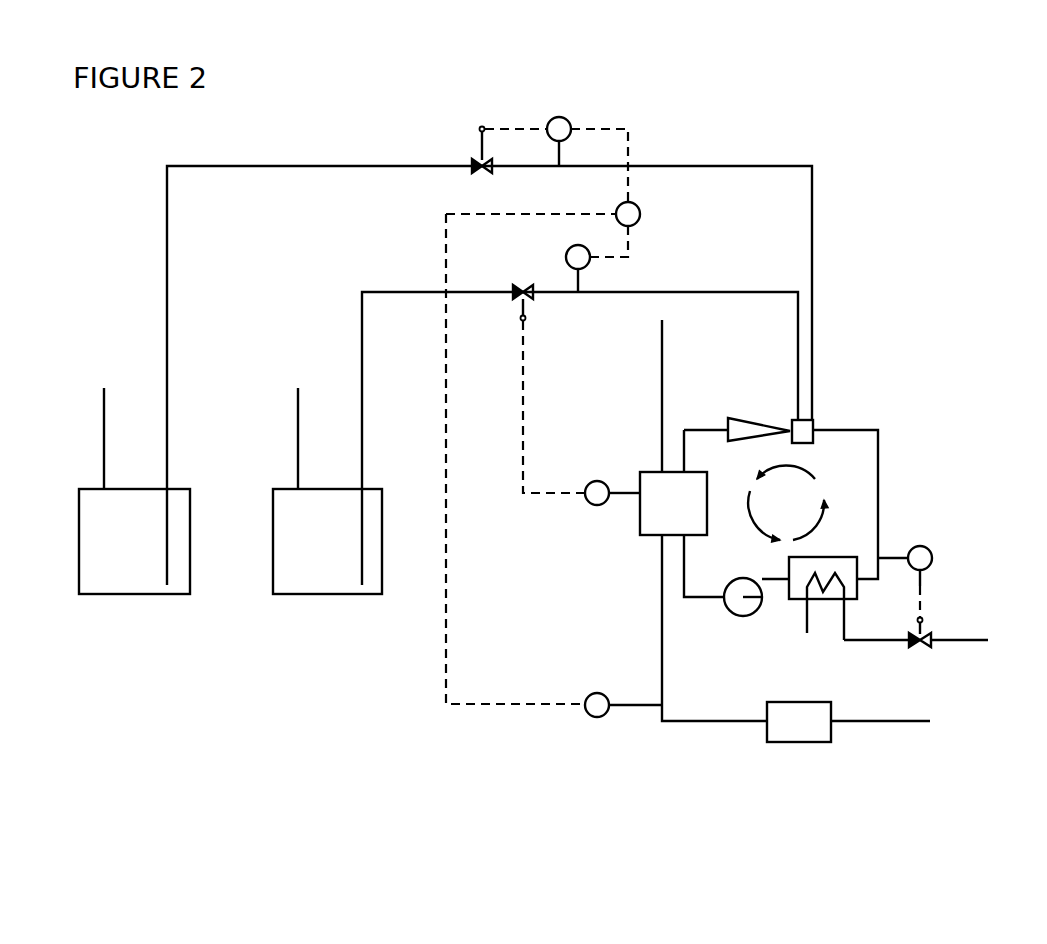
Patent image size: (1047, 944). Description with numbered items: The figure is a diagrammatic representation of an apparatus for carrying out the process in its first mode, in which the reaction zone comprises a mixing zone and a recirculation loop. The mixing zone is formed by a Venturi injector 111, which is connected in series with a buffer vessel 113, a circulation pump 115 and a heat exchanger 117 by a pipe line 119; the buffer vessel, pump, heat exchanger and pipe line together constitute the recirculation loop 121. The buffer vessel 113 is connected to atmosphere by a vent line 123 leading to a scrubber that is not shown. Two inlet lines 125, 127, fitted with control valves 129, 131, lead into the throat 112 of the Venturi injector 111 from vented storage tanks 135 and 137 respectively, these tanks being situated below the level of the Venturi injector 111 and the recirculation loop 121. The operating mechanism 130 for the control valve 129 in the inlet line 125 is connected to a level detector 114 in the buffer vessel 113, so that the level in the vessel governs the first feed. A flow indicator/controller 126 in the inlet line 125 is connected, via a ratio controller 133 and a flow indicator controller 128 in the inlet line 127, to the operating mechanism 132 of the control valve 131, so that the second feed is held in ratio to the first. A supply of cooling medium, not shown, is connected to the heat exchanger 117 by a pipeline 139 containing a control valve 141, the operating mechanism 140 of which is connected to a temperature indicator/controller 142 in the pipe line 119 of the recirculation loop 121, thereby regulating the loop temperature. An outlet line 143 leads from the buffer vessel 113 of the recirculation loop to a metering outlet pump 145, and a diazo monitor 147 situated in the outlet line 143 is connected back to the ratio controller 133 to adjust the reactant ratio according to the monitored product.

The Venturi injector 111 is at (750, 428).
The throat 112 is at (807, 427).
The buffer vessel 113 is at (650, 535).
The level detector 114 is at (587, 503).
The circulation pump 115 is at (743, 616).
The heat exchanger 117 is at (790, 599).
The pipe line 119 is at (878, 492).
The recirculation loop 121 is at (788, 504).
The vent line 123 is at (662, 410).
The inlet line 125 is at (798, 338).
The flow indicator/controller 126 is at (590, 255).
The inlet line 127 is at (812, 185).
The flow indicator controller 128 is at (571, 125).
The control valve 129 is at (513, 290).
The operating mechanism 130 is at (521, 316).
The control valve 131 is at (473, 163).
The operating mechanism 132 is at (481, 127).
The ratio controller 133 is at (618, 207).
The vented storage tank 135 is at (303, 512).
The vented storage tank 137 is at (102, 502).
The pipeline 139 is at (945, 640).
The operating mechanism 140 is at (923, 618).
The control valve 141 is at (930, 637).
The temperature indicator/controller 142 is at (930, 550).
The outlet line 143 is at (660, 603).
The metering outlet pump 145 is at (815, 742).
The diazo monitor 147 is at (592, 715).